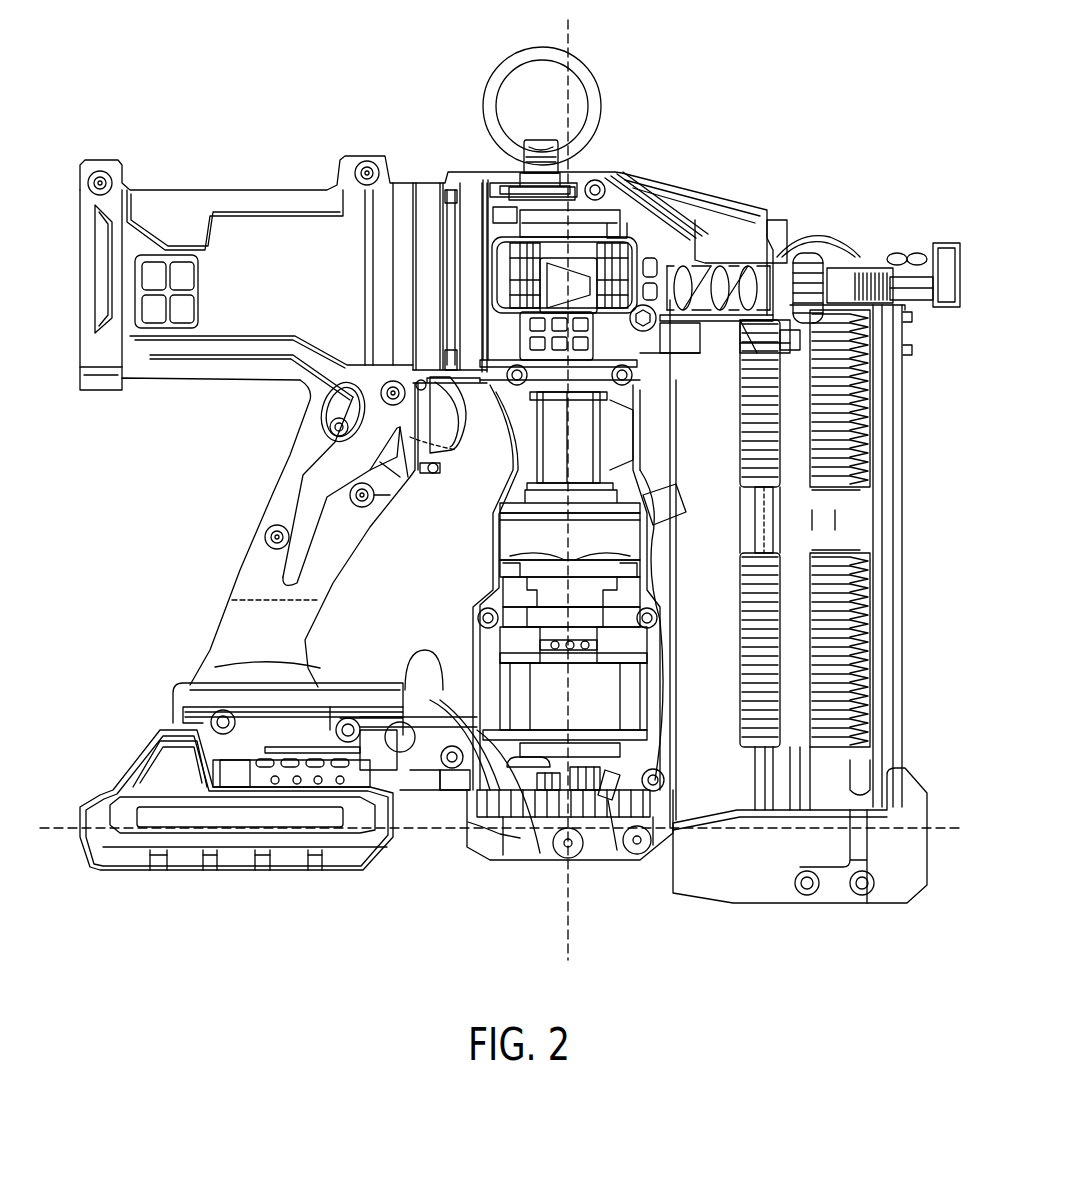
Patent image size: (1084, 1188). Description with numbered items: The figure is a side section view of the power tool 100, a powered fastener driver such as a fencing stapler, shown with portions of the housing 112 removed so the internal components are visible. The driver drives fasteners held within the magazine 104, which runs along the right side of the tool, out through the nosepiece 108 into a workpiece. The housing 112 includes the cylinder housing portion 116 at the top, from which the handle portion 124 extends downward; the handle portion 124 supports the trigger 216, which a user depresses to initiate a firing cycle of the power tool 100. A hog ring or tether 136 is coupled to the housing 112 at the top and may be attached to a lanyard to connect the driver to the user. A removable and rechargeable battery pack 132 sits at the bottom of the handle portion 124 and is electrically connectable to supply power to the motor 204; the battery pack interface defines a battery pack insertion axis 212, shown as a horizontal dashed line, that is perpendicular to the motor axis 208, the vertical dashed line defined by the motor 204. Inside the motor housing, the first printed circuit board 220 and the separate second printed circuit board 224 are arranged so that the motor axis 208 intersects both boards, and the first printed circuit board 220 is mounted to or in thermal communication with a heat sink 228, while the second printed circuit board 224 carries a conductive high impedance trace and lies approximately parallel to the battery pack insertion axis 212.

The power tool 100 is at (285, 92).
The magazine 104 is at (890, 537).
The nosepiece 108 is at (896, 258).
The housing 112 is at (215, 667).
The cylinder housing portion 116 is at (245, 186).
The handle portion 124 is at (262, 537).
The battery pack 132 is at (120, 777).
The tether 136 is at (486, 103).
The motor 204 is at (660, 833).
The motor axis 208 is at (572, 42).
The battery pack insertion axis 212 is at (411, 834).
The trigger 216 is at (442, 440).
The first printed circuit board 220 is at (470, 832).
The second printed circuit board 224 is at (555, 832).
The heat sink 228 is at (612, 778).